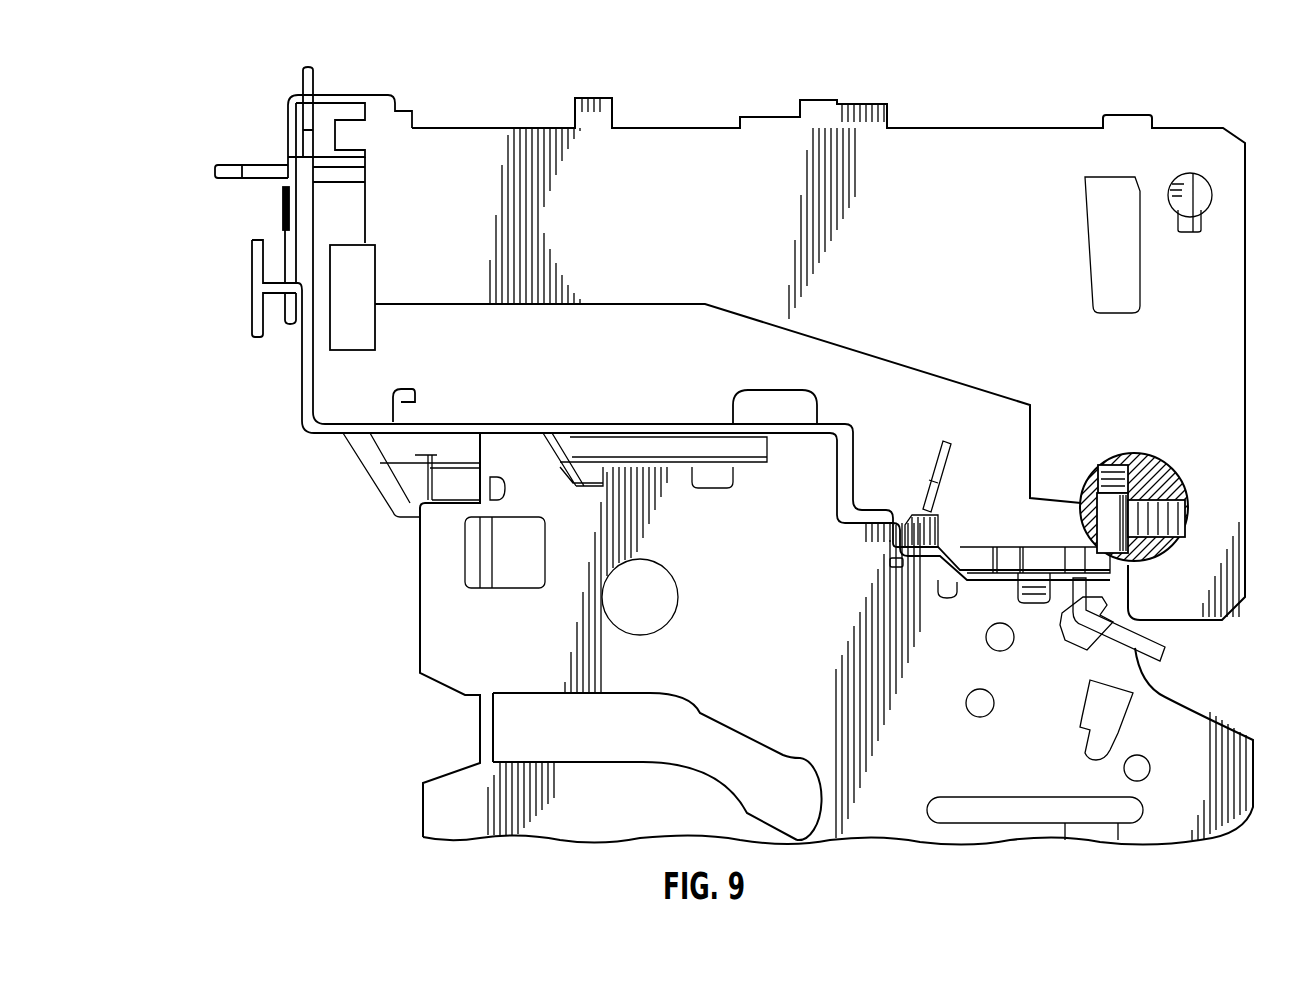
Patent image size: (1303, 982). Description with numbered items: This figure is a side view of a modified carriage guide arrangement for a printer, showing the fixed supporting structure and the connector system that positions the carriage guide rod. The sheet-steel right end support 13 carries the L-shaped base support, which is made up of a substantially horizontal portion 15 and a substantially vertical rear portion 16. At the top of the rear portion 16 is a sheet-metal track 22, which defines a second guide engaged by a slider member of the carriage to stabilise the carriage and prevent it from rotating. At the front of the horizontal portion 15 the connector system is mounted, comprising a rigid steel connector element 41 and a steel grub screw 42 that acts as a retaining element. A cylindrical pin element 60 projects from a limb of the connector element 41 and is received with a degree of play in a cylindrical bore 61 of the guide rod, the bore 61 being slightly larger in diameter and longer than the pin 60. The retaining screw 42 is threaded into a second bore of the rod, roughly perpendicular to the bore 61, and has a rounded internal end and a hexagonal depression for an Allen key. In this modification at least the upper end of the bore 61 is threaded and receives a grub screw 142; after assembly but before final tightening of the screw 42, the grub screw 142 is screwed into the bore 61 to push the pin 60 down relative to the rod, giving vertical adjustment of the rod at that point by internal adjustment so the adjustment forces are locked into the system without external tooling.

The right end support 13 is at (438, 600).
The horizontal portion 15 is at (612, 424).
The vertical rear portion 16 is at (305, 350).
The track 22 is at (393, 95).
The connector element 41 is at (1018, 548).
The grub screw 42 is at (1160, 490).
The pin element 60 is at (1095, 510).
The bore 61 is at (1120, 455).
The grub screw 142 is at (1105, 468).